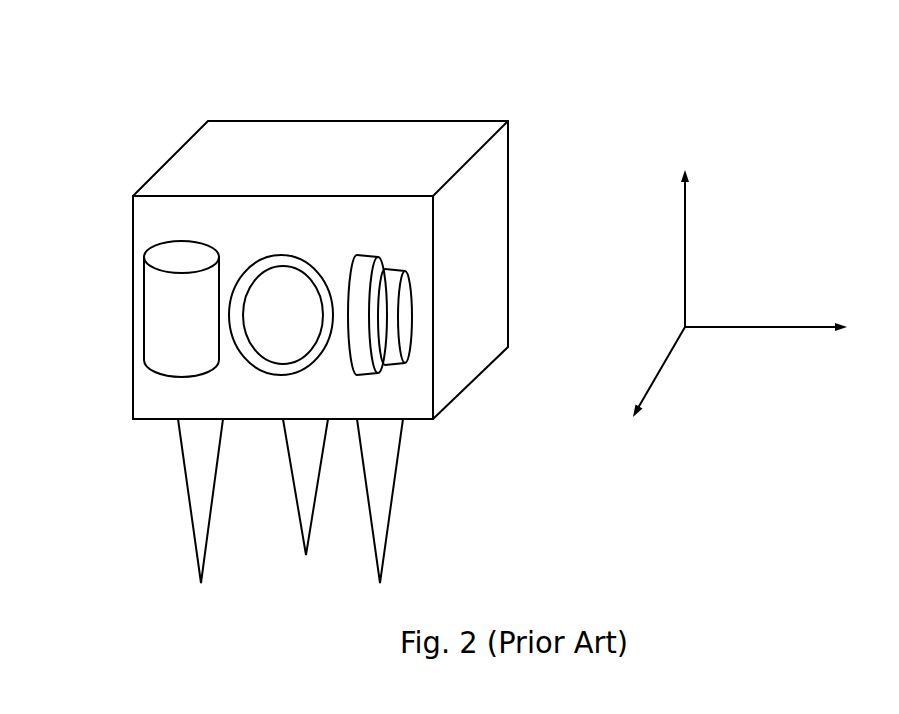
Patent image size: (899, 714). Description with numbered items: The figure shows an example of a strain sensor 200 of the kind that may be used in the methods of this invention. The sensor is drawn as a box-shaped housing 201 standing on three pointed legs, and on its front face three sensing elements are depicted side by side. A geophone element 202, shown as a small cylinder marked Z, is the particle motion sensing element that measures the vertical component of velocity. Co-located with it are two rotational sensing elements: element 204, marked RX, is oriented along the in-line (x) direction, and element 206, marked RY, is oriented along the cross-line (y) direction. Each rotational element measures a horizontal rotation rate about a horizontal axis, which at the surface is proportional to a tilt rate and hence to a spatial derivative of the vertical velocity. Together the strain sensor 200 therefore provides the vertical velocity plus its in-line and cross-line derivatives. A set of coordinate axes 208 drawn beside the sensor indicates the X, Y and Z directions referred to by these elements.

The strain sensor 200 is at (545, 100).
The housing 201 is at (367, 352).
The geophone element 202 is at (260, 204).
The rotational sensing element 204 is at (352, 203).
The rotational sensing element 206 is at (477, 274).
The coordinate axes 208 is at (795, 246).